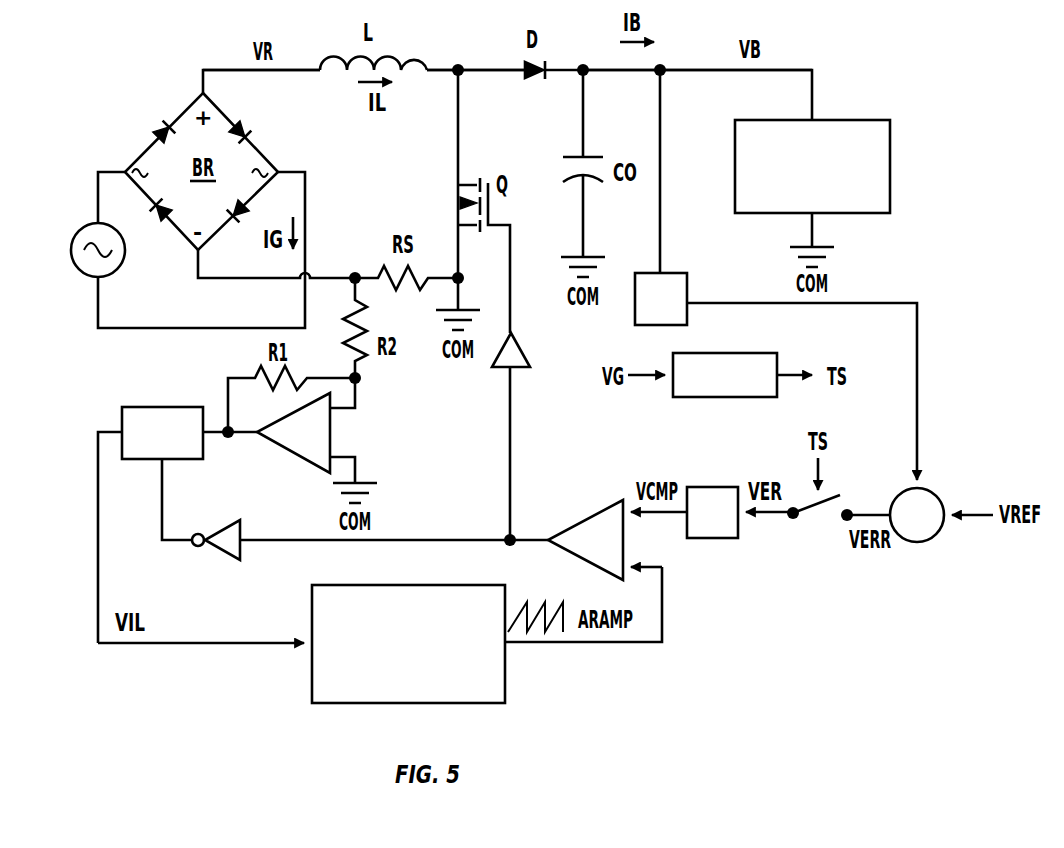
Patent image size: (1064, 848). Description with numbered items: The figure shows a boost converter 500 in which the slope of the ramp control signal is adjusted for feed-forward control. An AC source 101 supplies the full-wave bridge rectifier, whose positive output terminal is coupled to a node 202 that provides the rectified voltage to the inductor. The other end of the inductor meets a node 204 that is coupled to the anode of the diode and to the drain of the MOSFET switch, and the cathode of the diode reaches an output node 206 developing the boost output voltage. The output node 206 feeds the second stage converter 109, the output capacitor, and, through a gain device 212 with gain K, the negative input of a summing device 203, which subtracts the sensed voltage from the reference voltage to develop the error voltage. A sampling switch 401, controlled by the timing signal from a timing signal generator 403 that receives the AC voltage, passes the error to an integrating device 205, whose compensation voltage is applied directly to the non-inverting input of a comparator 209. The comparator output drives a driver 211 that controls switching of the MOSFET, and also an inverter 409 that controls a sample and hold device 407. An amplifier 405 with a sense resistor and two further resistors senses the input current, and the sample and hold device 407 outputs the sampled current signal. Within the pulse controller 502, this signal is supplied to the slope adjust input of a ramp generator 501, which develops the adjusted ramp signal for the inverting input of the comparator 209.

The AC source 101 is at (82, 228).
The second stage converter 109 is at (877, 120).
The node 202 is at (208, 68).
The summing device 203 is at (932, 490).
The node 204 is at (463, 64).
The integrating device 205 is at (728, 487).
The output node 206 is at (725, 70).
The comparator 209 is at (610, 507).
The driver 211 is at (525, 350).
The gain device 212 is at (687, 287).
The sampling switch 401 is at (813, 507).
The timing signal generator 403 is at (730, 397).
The amplifier 405 is at (320, 437).
The sample and hold device 407 is at (170, 407).
The inverter 409 is at (230, 523).
The boost converter 500 is at (834, 645).
The ramp generator 501 is at (505, 668).
The pulse controller 502 is at (408, 577).